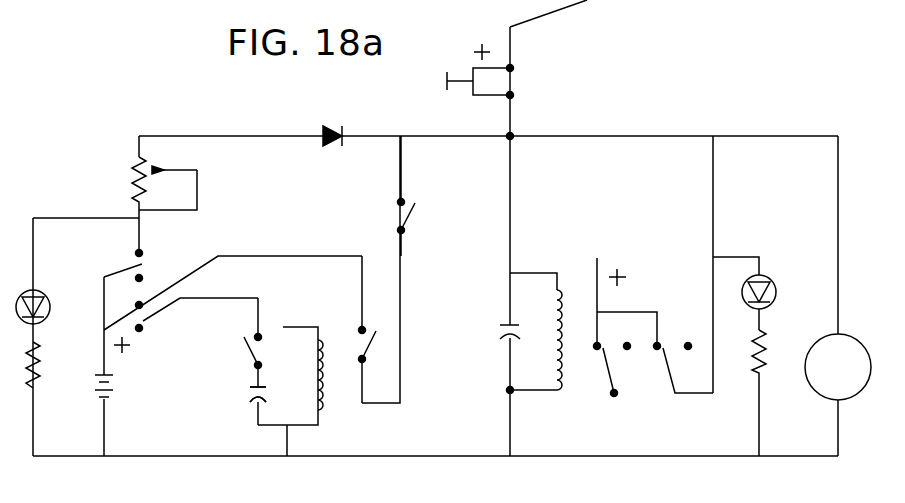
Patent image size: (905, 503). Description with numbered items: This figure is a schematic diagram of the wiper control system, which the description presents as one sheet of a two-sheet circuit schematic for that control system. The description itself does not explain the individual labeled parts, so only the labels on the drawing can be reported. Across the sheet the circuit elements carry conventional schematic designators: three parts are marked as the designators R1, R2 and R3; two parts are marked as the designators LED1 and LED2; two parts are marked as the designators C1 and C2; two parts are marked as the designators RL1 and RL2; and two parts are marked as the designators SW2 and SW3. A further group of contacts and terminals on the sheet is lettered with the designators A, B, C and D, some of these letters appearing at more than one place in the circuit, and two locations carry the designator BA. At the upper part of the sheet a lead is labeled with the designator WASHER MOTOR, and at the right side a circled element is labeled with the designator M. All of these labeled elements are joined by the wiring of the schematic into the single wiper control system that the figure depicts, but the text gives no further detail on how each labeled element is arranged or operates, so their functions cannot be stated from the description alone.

The variable resistor (potentiometer) R1 is at (180, 194).
The resistor R2 is at (47, 365).
The resistor R3 is at (772, 393).
The light emitting diode LED1 is at (55, 298).
The light emitting diode LED2 is at (764, 292).
The battery A is at (114, 398).
The selector switch contacts B is at (233, 303).
The relay contact C is at (424, 333).
The relay contact D is at (432, 395).
The capacitor C1 is at (271, 405).
The capacitor C2 is at (519, 345).
The relay RL1 is at (317, 356).
The relay RL2 is at (538, 349).
The switch SW2 is at (429, 215).
The washer motor switch SW3 is at (517, 228).
The relay contact block BA is at (654, 266).
The washer motor connection WASHER MOTOR is at (595, 37).
The motor M is at (838, 296).